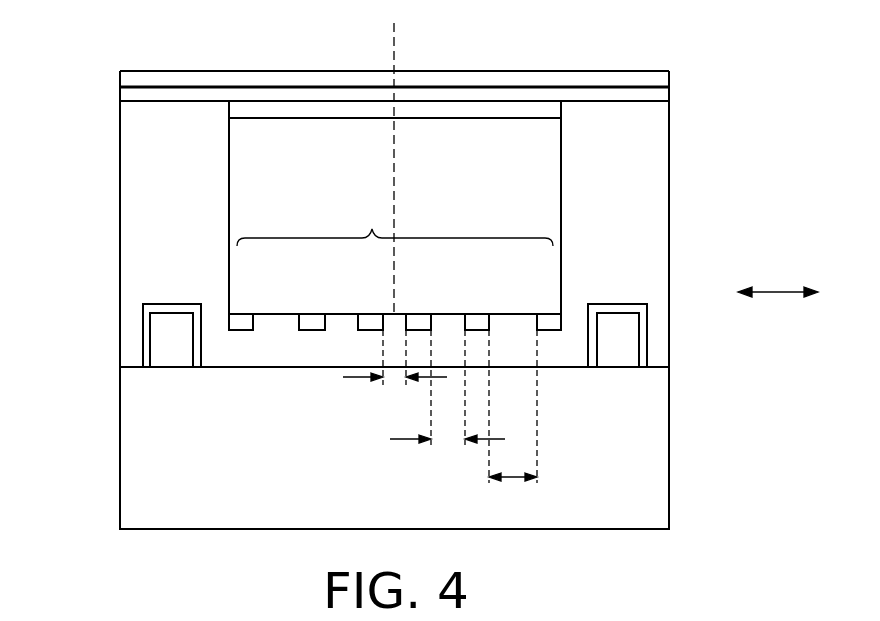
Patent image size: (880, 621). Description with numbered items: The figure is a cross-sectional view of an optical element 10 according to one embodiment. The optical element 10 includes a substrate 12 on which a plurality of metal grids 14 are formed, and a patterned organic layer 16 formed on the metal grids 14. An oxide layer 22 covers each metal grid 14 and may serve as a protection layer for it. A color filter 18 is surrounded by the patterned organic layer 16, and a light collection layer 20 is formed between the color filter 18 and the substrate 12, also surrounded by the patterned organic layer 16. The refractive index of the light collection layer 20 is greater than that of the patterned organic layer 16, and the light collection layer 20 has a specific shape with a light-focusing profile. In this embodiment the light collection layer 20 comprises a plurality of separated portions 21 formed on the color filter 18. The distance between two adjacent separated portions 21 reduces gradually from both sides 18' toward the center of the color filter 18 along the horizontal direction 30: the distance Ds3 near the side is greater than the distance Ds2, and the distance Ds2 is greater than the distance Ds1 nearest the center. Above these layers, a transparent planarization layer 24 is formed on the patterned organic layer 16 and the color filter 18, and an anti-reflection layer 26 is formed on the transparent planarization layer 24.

The optical element 10 is at (57, 55).
The substrate 12 is at (634, 510).
The metal grids 14 is at (171, 353).
The patterned organic layer 16 is at (128, 199).
The color filter 18 is at (395, 168).
The sides of the color filter 18' is at (397, 149).
The light collection layer 20 is at (395, 222).
The separated portions 21 is at (241, 318).
The oxide layer 22 is at (171, 310).
The transparent planarization layer 24 is at (662, 93).
The anti-reflection layer 26 is at (662, 80).
The horizontal direction 30 is at (778, 275).
The distance Ds1 is at (395, 374).
The distance Ds2 is at (447, 407).
The distance Ds3 is at (513, 428).